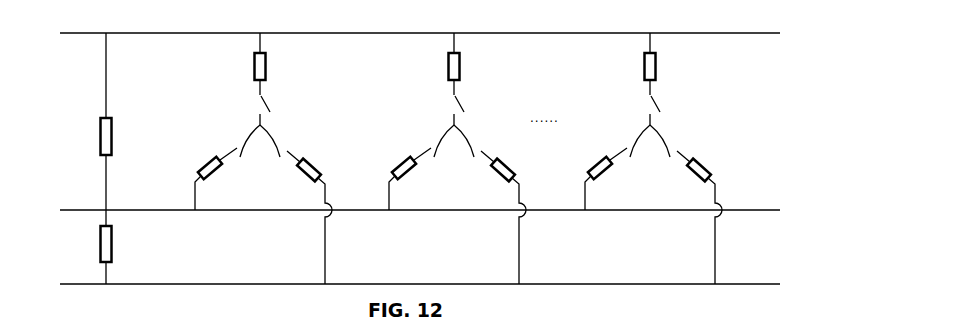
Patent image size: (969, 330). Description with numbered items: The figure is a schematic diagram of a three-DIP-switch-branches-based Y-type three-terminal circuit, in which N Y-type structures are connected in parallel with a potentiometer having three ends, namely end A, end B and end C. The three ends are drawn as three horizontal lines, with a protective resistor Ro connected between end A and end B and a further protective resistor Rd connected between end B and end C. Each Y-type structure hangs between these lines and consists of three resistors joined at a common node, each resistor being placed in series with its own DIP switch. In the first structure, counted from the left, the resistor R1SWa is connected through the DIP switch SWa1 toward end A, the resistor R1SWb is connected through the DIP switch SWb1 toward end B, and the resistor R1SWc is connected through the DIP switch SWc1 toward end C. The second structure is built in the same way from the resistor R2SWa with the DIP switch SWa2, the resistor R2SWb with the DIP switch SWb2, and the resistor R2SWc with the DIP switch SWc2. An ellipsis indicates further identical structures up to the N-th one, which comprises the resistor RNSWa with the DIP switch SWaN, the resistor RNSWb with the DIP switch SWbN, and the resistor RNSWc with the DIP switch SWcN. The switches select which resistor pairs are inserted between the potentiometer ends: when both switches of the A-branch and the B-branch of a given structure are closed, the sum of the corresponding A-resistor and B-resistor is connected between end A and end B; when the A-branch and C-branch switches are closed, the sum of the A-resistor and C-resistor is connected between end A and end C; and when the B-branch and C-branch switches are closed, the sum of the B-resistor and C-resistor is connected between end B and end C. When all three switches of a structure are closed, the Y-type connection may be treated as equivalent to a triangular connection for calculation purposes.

The end A of the potentiometer A is at (411, 34).
The end B of the potentiometer B is at (411, 211).
The end C of the potentiometer C is at (411, 279).
The protective resistor Ro is at (92, 121).
The protective resistor Rd is at (92, 247).
The resistor R1SWa is at (237, 64).
The DIP switch SWa1 is at (244, 110).
The DIP switch SWb1 is at (229, 142).
The DIP switch SWc1 is at (287, 143).
The resistor R1SWb is at (192, 182).
The resistor R1SWc is at (323, 218).
The resistor R2SWa is at (431, 64).
The DIP switch SWa2 is at (438, 110).
The DIP switch SWb2 is at (423, 142).
The DIP switch SWc2 is at (481, 143).
The resistor R2SWb is at (386, 182).
The resistor R2SWc is at (517, 218).
The resistor RNSWa is at (627, 64).
The DIP switch SWaN is at (634, 110).
The DIP switch SWbN is at (619, 142).
The DIP switch SWcN is at (677, 143).
The resistor RNSWb is at (582, 182).
The resistor RNSWc is at (713, 218).